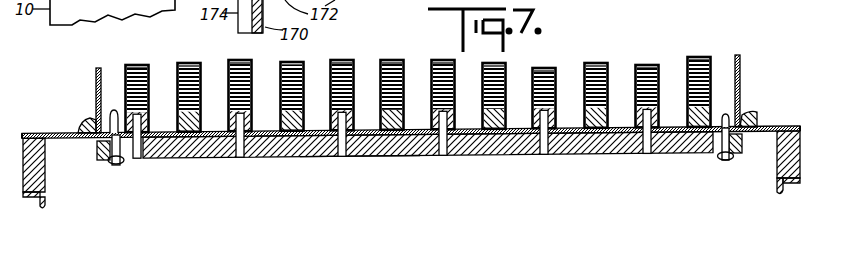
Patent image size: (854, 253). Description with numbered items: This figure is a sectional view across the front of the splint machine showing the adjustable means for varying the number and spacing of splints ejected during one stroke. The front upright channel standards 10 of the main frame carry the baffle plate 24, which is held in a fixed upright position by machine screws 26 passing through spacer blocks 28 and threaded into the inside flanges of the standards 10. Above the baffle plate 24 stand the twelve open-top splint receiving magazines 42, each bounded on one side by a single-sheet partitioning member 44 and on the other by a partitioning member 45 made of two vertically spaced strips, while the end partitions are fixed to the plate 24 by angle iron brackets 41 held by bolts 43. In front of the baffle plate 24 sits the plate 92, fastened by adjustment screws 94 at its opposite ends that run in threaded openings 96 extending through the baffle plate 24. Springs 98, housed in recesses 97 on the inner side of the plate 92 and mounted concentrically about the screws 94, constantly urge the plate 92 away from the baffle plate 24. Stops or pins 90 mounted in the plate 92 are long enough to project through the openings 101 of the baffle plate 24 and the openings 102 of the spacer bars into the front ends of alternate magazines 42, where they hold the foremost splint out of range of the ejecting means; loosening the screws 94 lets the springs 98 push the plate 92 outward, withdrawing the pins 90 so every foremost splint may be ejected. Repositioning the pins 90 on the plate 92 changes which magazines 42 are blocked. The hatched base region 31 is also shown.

The supporting channel standards 10 is at (43, 208).
The baffle plate 24 is at (60, 132).
The machine screws 26 is at (32, 131).
The spacer blocks 28 is at (45, 176).
The hatched base of stack 31 is at (230, 118).
The angle iron brackets 41 is at (93, 125).
The splint receiving magazines 42 is at (233, 62).
The bolts 43 is at (88, 128).
The partitioning member 44 is at (333, 70).
The partitioning member 45 is at (353, 66).
The projecting stops or pins 90 is at (247, 126).
The plate 92 is at (589, 153).
The adjustment screws 94 is at (112, 165).
The threaded openings 96 is at (113, 124).
The recesses 97 is at (121, 163).
The springs 98 is at (97, 150).
The openings 101 is at (352, 149).
The openings 102 is at (145, 118).